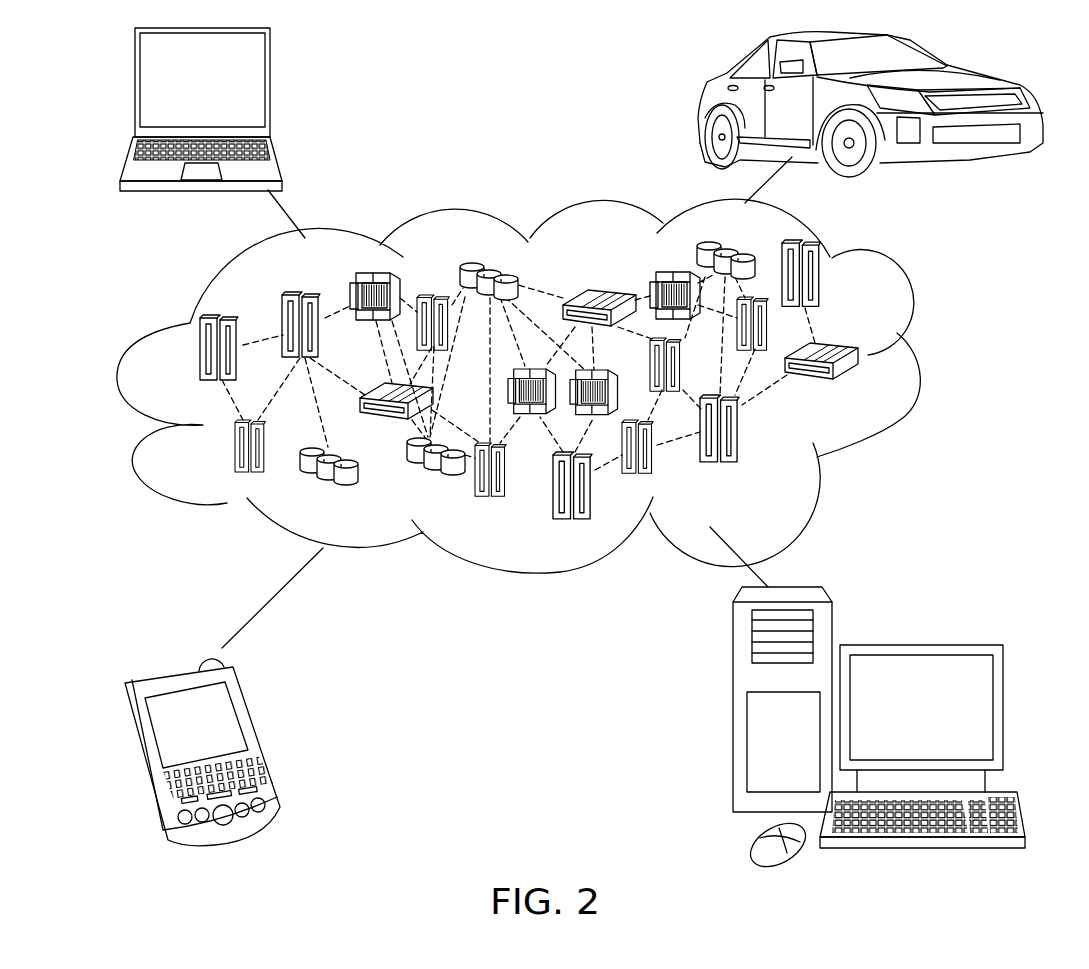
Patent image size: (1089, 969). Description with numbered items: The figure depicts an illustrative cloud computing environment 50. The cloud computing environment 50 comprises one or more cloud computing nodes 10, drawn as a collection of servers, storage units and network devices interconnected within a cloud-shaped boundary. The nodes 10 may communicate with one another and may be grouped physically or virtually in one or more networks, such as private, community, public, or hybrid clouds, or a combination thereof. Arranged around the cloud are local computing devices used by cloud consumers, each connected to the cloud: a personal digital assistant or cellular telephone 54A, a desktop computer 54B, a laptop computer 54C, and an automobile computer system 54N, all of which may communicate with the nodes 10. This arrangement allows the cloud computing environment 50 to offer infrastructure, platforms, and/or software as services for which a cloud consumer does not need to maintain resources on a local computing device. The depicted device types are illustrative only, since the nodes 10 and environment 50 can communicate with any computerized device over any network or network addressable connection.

The personal digital assistant (PDA) or cellular telephone 54A is at (262, 737).
The desktop computer 54B is at (918, 645).
The laptop computer 54C is at (270, 88).
The automobile computer system 54N is at (702, 104).
The cloud computing environment 50 is at (920, 357).
The cloud computing node 10 is at (870, 392).